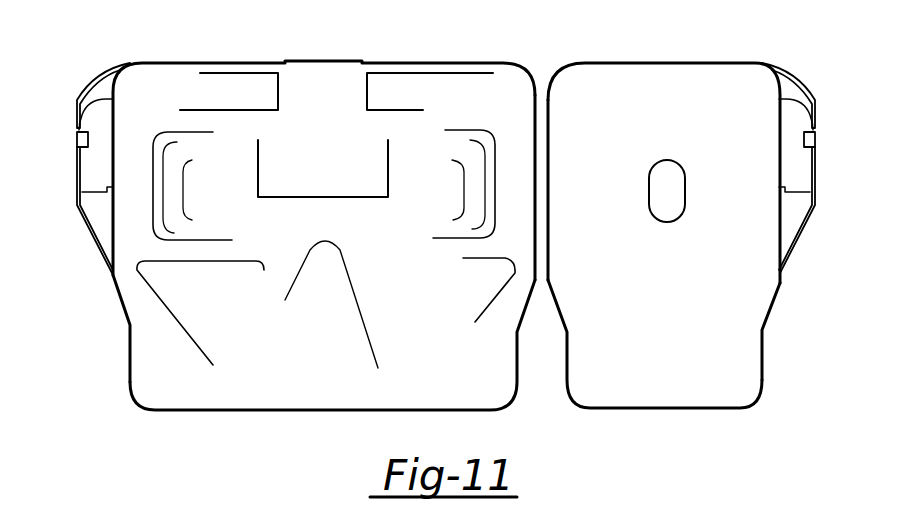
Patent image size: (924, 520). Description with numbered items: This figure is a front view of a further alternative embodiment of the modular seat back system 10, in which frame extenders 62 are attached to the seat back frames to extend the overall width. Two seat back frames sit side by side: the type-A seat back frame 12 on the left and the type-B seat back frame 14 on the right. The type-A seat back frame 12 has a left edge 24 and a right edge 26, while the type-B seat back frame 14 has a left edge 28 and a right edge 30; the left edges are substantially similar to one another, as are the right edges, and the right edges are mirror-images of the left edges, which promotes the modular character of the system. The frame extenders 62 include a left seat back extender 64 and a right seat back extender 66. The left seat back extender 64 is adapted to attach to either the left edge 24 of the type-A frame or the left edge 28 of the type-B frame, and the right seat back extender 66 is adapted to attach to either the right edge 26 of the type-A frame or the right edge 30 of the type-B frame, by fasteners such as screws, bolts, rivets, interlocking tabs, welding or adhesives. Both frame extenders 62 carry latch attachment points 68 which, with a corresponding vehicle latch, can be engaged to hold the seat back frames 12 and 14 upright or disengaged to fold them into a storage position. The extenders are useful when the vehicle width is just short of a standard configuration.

The modular seat back system 10 is at (115, 38).
The type-A seat back frame 12 is at (281, 48).
The type-B seat back frame 14 is at (702, 50).
The left edge of type-A seat back frame 24 is at (537, 121).
The right edge of type-B seat back frame 30 is at (550, 146).
The right edge of type-A seat back frame 26 is at (109, 277).
The left edge of type-B seat back frame 28 is at (780, 262).
The frame extender 62 is at (66, 128).
The left seat back extender 64 is at (808, 220).
The right seat back extender 66 is at (92, 243).
The latch attachment point 68 is at (76, 141).